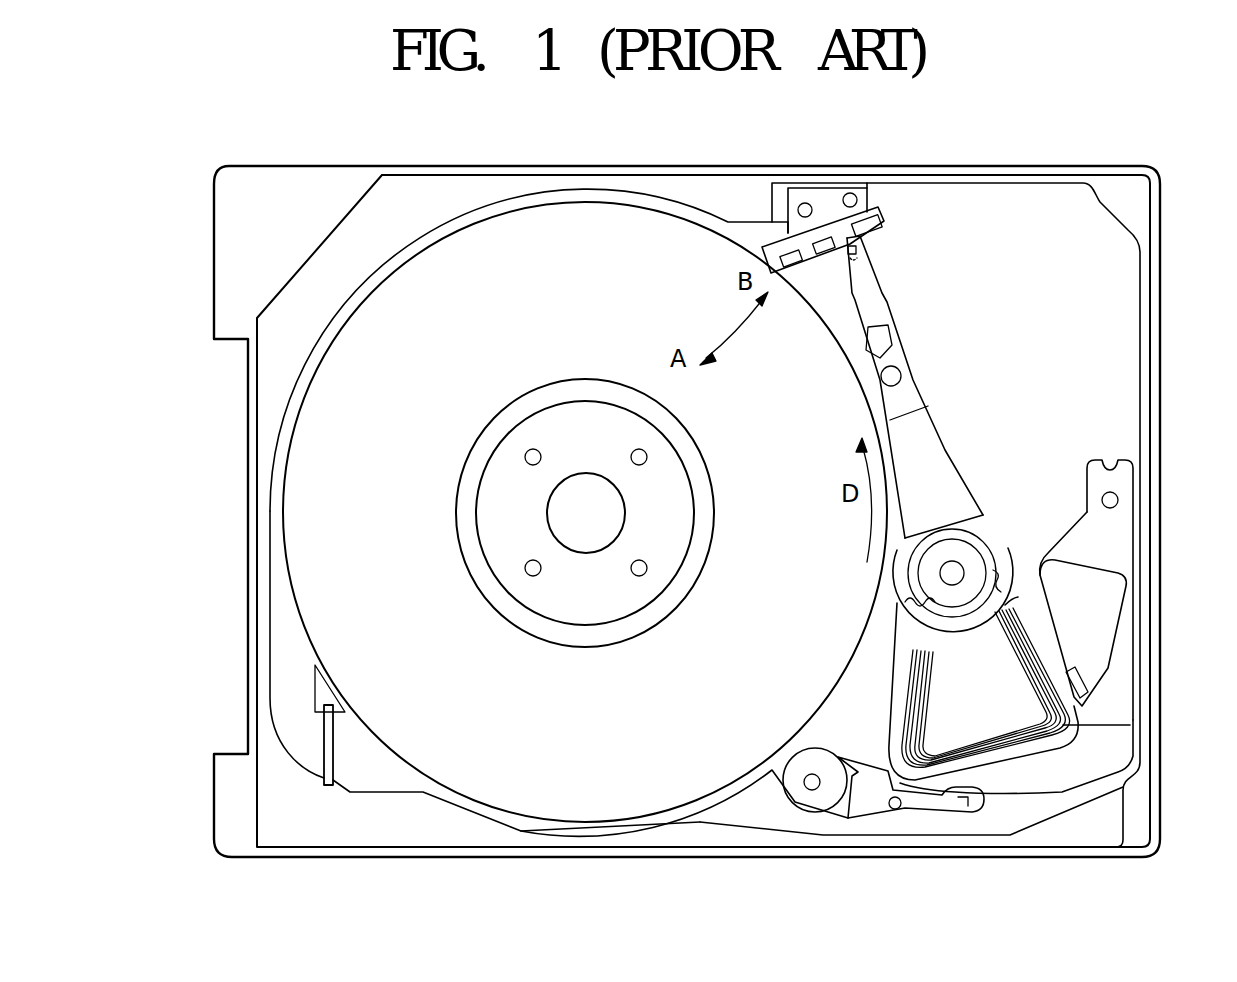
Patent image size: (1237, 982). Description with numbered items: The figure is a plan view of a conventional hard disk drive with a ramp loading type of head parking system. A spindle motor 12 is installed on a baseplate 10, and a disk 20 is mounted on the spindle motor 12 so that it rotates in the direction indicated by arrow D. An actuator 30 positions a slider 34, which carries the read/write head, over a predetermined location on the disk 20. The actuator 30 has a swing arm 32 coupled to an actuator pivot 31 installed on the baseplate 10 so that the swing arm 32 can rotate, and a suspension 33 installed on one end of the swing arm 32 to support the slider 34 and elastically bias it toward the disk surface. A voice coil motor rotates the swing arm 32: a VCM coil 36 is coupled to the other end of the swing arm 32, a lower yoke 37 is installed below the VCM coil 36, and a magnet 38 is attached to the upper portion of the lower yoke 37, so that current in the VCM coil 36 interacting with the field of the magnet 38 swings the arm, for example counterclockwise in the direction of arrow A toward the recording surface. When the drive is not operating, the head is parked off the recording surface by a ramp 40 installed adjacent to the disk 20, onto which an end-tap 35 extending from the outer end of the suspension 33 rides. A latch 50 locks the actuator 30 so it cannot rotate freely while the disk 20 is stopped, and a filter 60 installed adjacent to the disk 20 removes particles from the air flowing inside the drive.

The baseplate 10 is at (722, 193).
The spindle motor 12 is at (505, 478).
The disk 20 is at (552, 225).
The actuator 30 is at (1012, 493).
The actuator pivot 31 is at (958, 568).
The swing arm 32 is at (930, 447).
The suspension 33 is at (867, 286).
The slider 34 is at (863, 258).
The end-tap 35 is at (847, 238).
The VCM coil 36 is at (1063, 723).
The lower yoke 37 is at (1117, 695).
The magnet 38 is at (1113, 602).
The ramp 40 is at (800, 237).
The latch 50 is at (907, 815).
The filter 60 is at (324, 737).